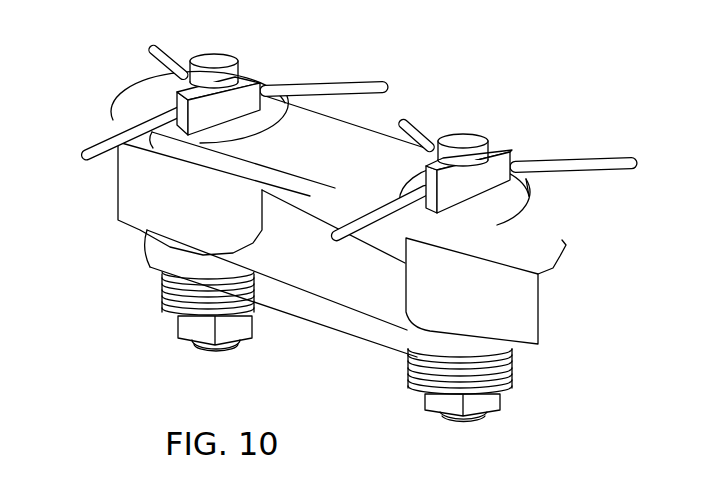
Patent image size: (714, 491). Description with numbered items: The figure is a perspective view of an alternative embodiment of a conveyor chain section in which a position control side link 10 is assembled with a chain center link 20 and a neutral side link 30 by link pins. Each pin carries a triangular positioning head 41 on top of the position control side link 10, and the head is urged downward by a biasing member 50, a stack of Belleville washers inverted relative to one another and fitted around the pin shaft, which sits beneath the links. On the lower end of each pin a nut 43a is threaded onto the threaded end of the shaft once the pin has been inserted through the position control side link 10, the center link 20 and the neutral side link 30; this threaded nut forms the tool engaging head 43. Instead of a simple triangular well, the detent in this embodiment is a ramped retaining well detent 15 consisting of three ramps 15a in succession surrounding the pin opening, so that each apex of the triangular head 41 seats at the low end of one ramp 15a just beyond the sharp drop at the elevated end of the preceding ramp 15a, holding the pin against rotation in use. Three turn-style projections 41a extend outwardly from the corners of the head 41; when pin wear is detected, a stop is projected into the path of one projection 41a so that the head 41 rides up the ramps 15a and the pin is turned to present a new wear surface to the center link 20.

The position control side link 10 is at (366, 130).
The ramped retaining well detent 15 is at (532, 216).
The ramps 15a is at (187, 80).
The chain center link 20 is at (223, 220).
The neutral side link 30 is at (350, 288).
The positioning head 41 is at (227, 118).
The turn-style projections 41a is at (165, 50).
The tool engaging head 43 is at (256, 340).
The nut 43a is at (188, 328).
The biasing member 50 is at (158, 270).